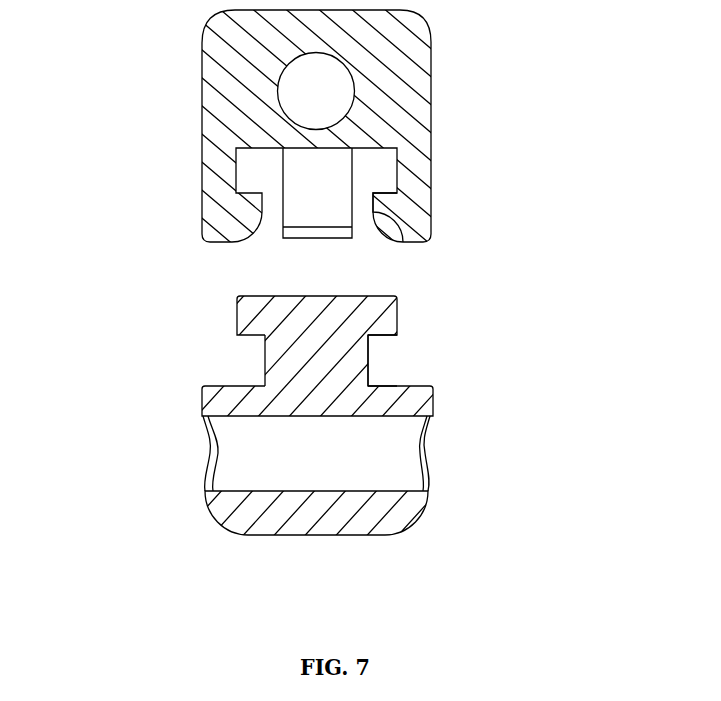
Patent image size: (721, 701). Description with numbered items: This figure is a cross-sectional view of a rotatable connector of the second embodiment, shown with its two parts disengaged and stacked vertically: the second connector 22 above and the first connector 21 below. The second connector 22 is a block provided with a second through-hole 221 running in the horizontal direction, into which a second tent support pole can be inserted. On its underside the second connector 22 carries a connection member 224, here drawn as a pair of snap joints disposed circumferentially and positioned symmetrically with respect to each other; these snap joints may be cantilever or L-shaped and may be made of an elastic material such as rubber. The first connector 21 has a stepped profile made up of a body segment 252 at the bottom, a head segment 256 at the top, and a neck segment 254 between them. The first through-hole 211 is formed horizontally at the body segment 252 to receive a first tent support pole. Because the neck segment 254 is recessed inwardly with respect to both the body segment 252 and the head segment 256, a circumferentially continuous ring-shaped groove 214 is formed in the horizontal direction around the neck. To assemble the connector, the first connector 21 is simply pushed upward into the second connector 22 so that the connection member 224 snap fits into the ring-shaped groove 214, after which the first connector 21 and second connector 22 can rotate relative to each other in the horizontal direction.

The second connector 22 is at (265, 51).
The second through-hole 221 is at (316, 90).
The connection member 224 is at (375, 200).
The head segment 256 is at (257, 313).
The neck segment 254 is at (293, 360).
The body segment 252 is at (210, 398).
The ring-shaped groove 214 is at (382, 360).
The first through-hole 211 is at (380, 460).
The first connector 21 is at (329, 425).